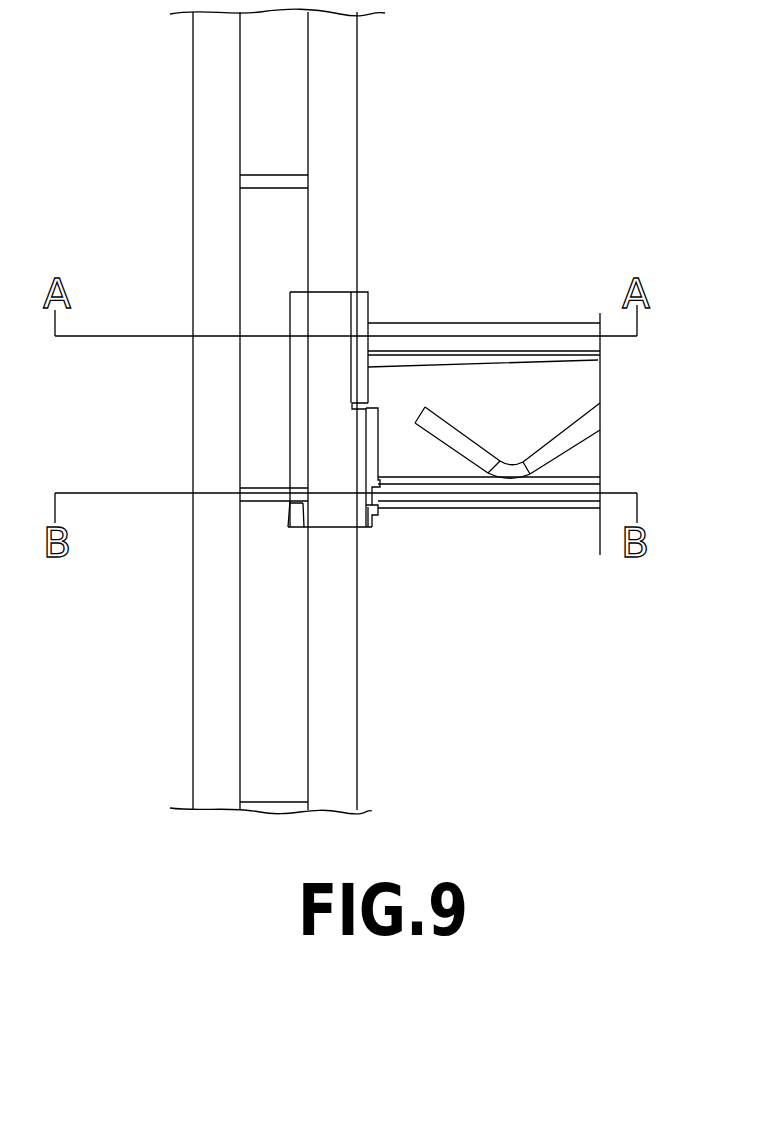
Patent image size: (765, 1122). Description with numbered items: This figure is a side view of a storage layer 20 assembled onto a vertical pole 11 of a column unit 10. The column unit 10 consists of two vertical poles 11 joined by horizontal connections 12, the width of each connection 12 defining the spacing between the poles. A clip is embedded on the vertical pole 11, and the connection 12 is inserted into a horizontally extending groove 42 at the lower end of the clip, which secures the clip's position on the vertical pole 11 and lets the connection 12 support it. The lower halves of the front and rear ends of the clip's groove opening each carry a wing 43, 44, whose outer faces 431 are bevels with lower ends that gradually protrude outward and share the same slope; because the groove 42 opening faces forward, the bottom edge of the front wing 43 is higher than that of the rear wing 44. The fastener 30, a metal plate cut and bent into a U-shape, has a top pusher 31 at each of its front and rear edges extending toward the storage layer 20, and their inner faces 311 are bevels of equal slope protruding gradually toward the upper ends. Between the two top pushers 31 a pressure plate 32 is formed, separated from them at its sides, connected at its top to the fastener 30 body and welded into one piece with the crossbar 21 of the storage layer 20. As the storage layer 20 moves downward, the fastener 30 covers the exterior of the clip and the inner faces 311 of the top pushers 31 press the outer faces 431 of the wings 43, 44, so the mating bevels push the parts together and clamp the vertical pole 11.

The column unit 10 is at (188, 81).
The vertical pole 11 is at (205, 187).
The connection 12 is at (253, 500).
The storage layer 20 is at (543, 326).
The crossbar 21 is at (553, 502).
The fastener 30 is at (327, 308).
The top pusher 31 is at (363, 535).
The pressure plate 32 is at (350, 502).
The inner face 311 is at (383, 450).
The groove 42 is at (293, 527).
The wing 43 is at (373, 437).
The wing 44 is at (378, 513).
The outer face 431 is at (365, 420).